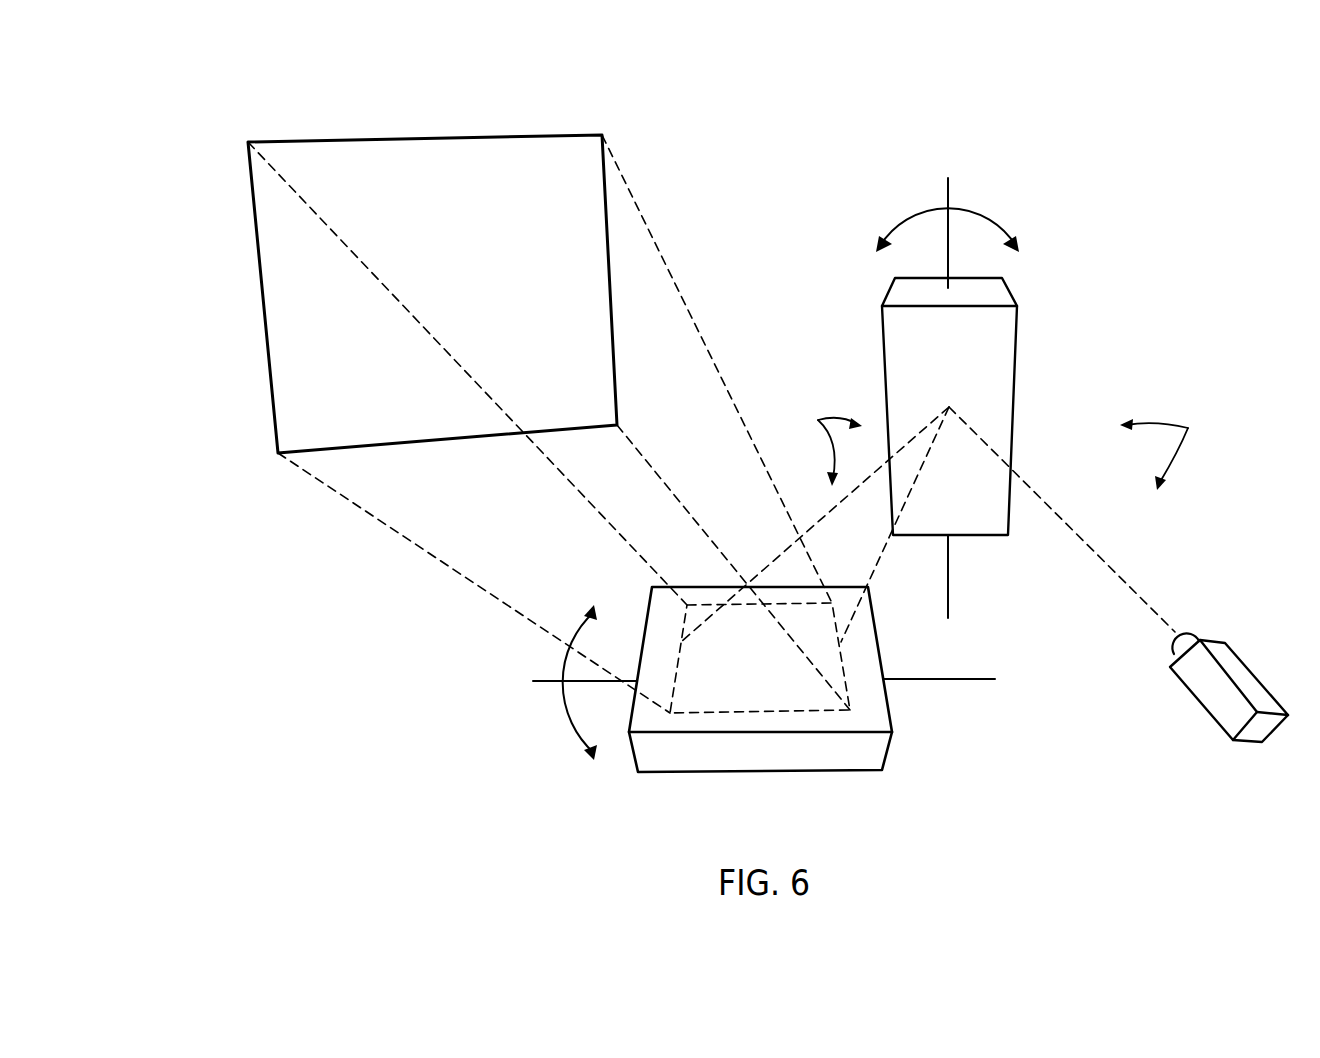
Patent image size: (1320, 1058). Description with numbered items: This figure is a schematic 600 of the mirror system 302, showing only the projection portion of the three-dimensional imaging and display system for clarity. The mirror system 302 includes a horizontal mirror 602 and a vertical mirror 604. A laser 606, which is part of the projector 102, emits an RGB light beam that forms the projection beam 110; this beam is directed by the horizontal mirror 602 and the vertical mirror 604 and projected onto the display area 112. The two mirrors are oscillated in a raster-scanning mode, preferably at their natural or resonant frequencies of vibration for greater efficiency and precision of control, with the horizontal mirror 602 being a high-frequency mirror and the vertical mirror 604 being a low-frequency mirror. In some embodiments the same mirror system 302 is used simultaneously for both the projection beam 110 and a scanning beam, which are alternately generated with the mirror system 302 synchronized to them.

The schematic 600 is at (246, 95).
The display area 112 is at (310, 326).
The horizontal mirror 602 is at (1003, 352).
The mirror system 302 is at (818, 447).
The projector 102 is at (1175, 453).
The projection beam 110 is at (1118, 575).
The vertical mirror 604 is at (665, 757).
The laser 606 is at (1195, 677).